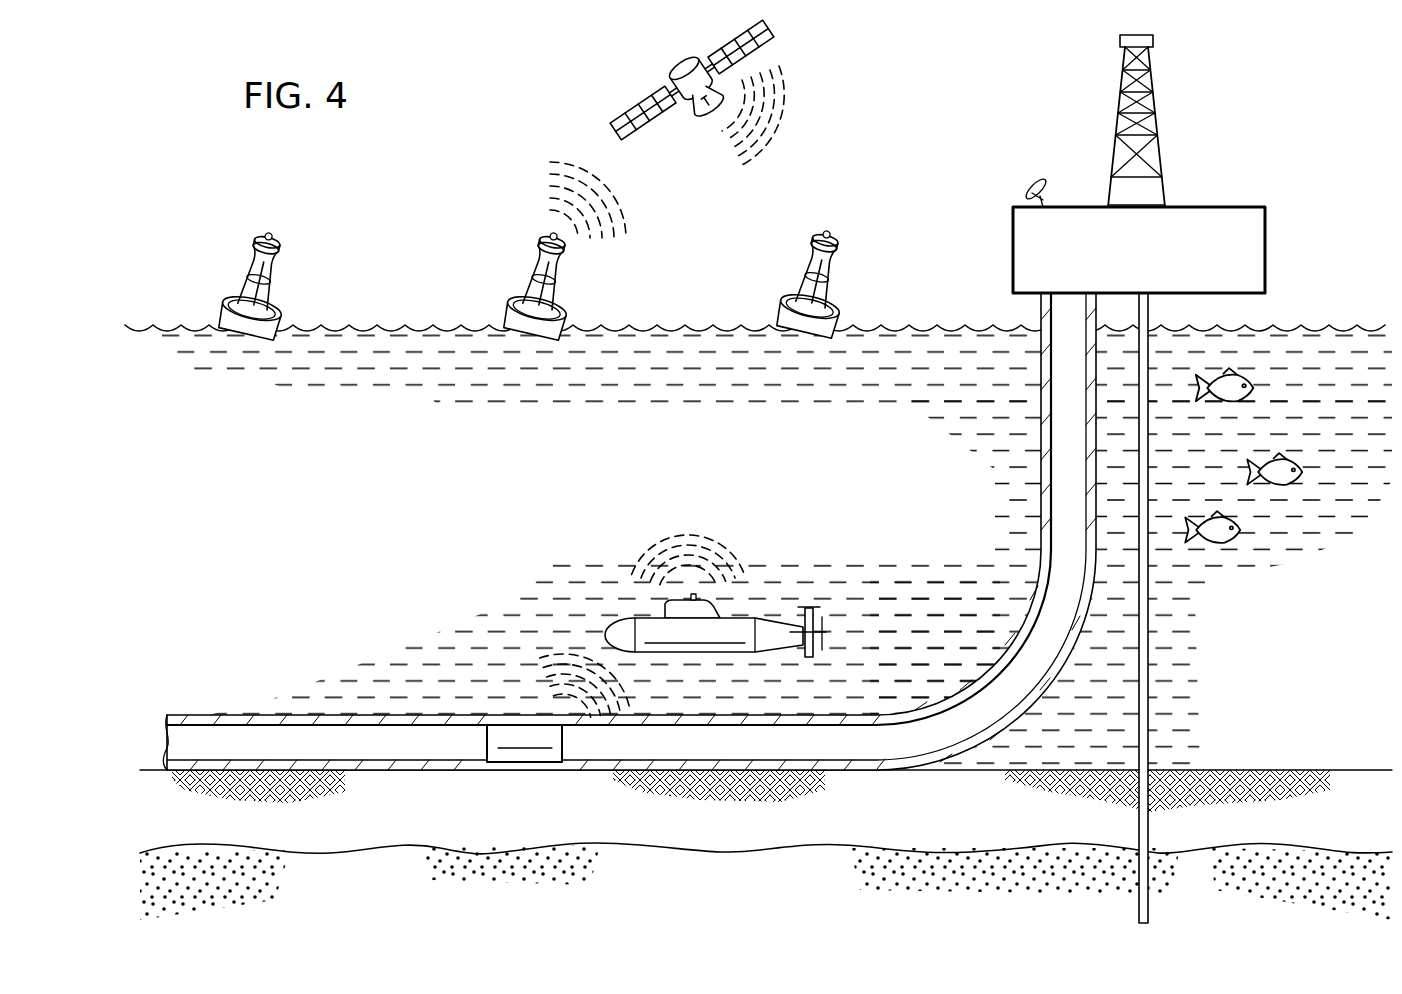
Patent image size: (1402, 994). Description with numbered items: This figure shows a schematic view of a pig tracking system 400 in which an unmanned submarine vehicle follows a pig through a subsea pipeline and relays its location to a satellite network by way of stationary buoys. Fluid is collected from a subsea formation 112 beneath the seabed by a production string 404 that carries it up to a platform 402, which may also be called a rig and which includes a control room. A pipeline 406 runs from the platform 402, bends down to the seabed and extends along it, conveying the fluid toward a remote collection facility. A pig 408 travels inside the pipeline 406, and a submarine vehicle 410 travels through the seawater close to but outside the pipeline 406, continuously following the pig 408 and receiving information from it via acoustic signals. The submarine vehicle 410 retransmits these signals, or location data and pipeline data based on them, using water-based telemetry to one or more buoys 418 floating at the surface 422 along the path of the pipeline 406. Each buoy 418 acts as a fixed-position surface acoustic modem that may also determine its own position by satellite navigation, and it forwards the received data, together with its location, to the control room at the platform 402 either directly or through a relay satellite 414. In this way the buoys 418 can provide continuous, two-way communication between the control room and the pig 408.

The pig tracking system 400 is at (522, 82).
The platform 402 is at (1160, 113).
The production string 404 is at (1150, 655).
The pipeline 406 is at (1038, 490).
The pig 408 is at (510, 757).
The submarine vehicle 410 is at (698, 654).
The satellite 414 is at (647, 104).
The buoy 418 is at (268, 230).
The surface 422 is at (420, 328).
The subsea formation 112 is at (1362, 855).